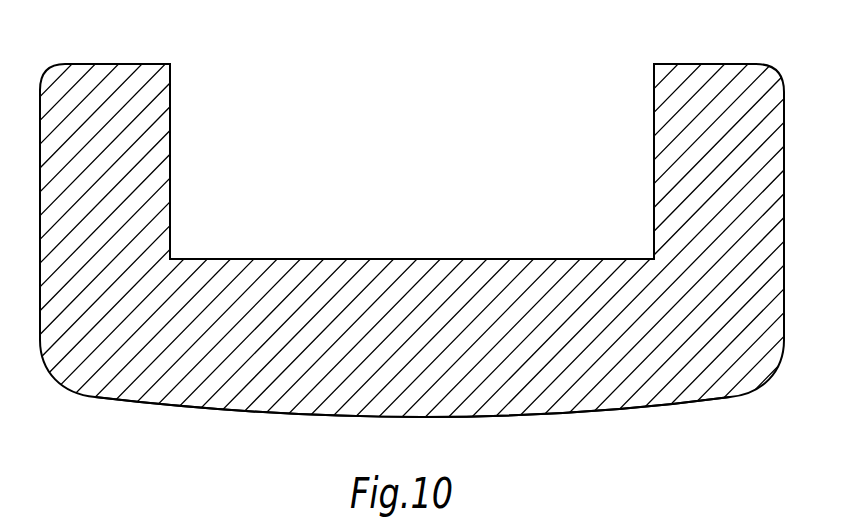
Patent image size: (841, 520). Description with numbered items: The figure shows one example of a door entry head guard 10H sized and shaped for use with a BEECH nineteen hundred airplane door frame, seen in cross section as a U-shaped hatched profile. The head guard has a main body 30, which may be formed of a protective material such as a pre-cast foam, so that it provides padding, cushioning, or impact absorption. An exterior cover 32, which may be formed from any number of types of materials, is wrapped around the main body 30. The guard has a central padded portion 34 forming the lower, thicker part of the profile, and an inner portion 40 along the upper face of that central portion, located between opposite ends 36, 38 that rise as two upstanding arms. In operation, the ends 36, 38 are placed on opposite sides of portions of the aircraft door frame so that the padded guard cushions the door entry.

The door entry head guard 10H is at (484, 54).
The main body 30 is at (313, 290).
The exterior cover 32 is at (417, 277).
The central padded portion 34 is at (281, 413).
The end 36 is at (103, 63).
The end 38 is at (708, 63).
The inner portion 40 is at (495, 259).